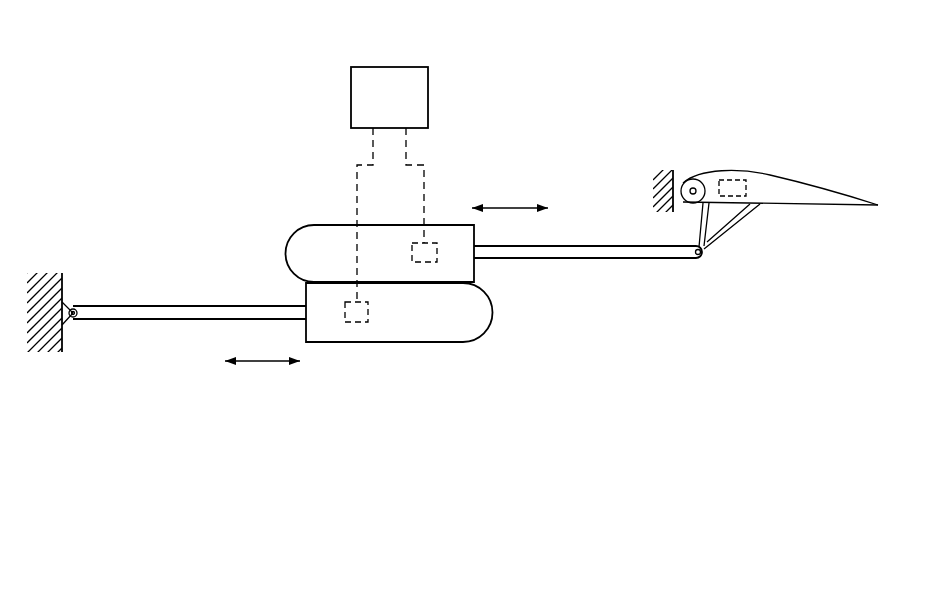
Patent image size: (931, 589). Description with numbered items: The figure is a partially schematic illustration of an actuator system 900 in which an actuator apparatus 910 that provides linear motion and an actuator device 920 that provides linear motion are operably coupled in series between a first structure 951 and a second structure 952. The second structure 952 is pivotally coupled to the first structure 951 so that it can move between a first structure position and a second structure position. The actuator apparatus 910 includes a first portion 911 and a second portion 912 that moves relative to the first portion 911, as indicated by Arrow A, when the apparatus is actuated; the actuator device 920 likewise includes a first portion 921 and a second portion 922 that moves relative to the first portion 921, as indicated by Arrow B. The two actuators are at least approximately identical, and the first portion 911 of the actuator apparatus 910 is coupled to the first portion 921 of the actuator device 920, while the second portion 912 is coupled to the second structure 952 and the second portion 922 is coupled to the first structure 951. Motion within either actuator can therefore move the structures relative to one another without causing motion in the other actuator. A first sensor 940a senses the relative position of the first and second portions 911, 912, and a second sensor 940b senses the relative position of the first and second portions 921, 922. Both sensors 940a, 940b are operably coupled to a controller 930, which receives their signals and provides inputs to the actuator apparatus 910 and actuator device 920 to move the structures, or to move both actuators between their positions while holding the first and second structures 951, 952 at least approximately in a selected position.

The actuator system 900 is at (575, 455).
The actuator apparatus 910 is at (469, 235).
The first portion of the actuator apparatus 911 is at (323, 224).
The second portion of the actuator apparatus 912 is at (612, 259).
The actuator device 920 is at (277, 371).
The first portion of the actuator device 921 is at (338, 343).
The second portion of the actuator device 922 is at (178, 306).
The controller 930 is at (403, 66).
The first sensor 940a is at (437, 258).
The second sensor 940b is at (368, 316).
The first structure 951 is at (42, 345).
The second structure 952 is at (810, 187).